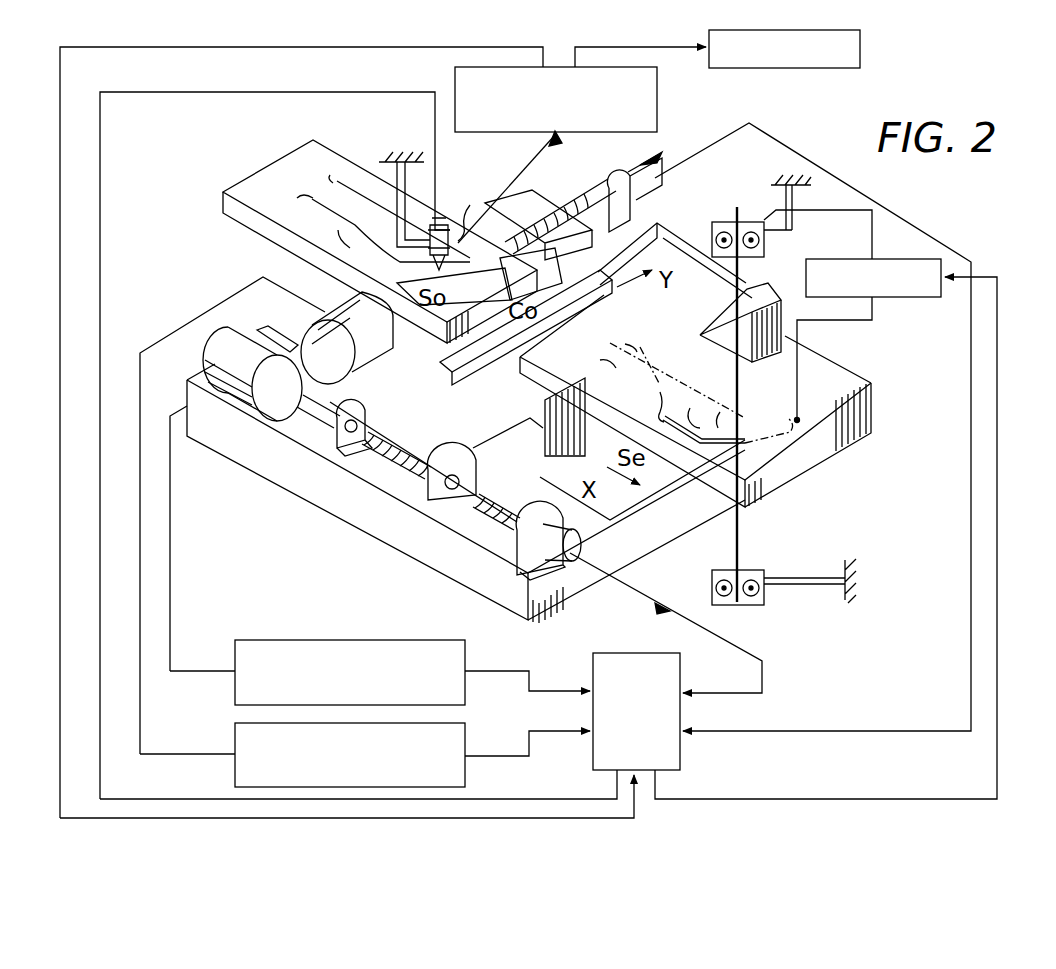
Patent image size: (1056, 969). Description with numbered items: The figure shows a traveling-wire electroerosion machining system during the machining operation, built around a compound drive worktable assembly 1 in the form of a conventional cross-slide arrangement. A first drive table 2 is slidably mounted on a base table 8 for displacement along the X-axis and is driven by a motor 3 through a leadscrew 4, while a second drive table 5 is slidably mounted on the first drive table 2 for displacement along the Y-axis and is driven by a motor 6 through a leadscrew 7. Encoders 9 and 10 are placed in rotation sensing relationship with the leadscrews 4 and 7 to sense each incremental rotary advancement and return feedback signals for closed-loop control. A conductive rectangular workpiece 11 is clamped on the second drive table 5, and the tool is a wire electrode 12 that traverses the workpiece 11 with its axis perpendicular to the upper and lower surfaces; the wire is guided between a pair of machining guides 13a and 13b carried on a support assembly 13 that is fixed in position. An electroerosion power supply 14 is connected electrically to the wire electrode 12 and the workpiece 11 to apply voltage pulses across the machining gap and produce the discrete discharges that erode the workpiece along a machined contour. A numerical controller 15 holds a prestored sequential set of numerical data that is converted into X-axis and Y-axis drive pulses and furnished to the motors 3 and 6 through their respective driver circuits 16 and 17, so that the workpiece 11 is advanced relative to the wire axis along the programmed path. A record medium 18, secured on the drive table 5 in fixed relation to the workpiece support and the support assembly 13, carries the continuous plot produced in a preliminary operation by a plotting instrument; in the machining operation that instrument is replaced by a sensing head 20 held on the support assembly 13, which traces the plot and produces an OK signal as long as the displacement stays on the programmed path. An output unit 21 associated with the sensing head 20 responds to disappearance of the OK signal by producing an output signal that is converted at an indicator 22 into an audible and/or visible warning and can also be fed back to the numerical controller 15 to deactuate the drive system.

The compound drive worktable assembly 1 is at (479, 195).
The first drive table 2 is at (380, 432).
The motor 3 is at (222, 398).
The leadscrew 4 is at (470, 505).
The second drive table 5 is at (650, 300).
The motor 6 is at (340, 320).
The leadscrew 7 is at (572, 205).
The base table 8 is at (258, 455).
The encoder 9 is at (512, 542).
The encoder 10 is at (625, 170).
The workpiece 11 is at (810, 463).
The wire electrode 12 is at (742, 530).
The support assembly 13 is at (379, 162).
The machining guide 13a is at (764, 250).
The machining guide 13b is at (748, 605).
The electroerosion power supply 14 is at (905, 297).
The numerical controller 15 is at (593, 657).
The driver circuit 16 is at (376, 640).
The driver circuit 17 is at (450, 723).
The record medium 18 is at (270, 172).
The sensing head 20 is at (446, 218).
The output unit 21 is at (657, 95).
The indicator 22 is at (860, 52).